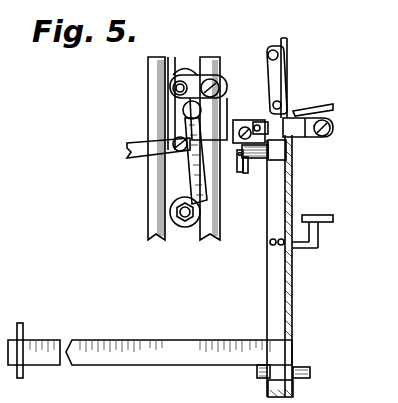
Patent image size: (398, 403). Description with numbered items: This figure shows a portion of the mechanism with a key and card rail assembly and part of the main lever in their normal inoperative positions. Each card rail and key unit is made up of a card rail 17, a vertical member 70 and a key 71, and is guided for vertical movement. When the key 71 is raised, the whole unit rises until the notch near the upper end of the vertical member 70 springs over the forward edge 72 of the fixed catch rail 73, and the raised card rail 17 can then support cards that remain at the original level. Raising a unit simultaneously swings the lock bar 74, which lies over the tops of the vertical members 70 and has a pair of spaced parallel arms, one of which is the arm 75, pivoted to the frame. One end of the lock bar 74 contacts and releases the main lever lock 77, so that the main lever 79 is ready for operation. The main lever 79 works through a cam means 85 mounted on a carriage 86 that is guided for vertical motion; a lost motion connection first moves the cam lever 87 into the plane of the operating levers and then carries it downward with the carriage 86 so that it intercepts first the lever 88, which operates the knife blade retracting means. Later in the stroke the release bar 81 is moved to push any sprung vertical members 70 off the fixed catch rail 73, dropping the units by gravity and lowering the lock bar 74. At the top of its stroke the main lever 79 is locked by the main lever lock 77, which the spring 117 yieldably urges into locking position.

The card rail 17 is at (142, 345).
The vertical member 70 is at (282, 283).
The key 71 is at (324, 222).
The forward edge 72 is at (290, 153).
The fixed catch rail 73 is at (258, 170).
The lock bar 74 is at (290, 142).
The arm 75 is at (255, 119).
The main lever lock 77 is at (288, 108).
The main lever 79 is at (318, 108).
The release bar 81 is at (265, 117).
The cam means 85 is at (221, 76).
The carriage 86 is at (185, 186).
The cam lever 87 is at (217, 140).
The lever 88 is at (240, 173).
The spring 117 is at (288, 78).